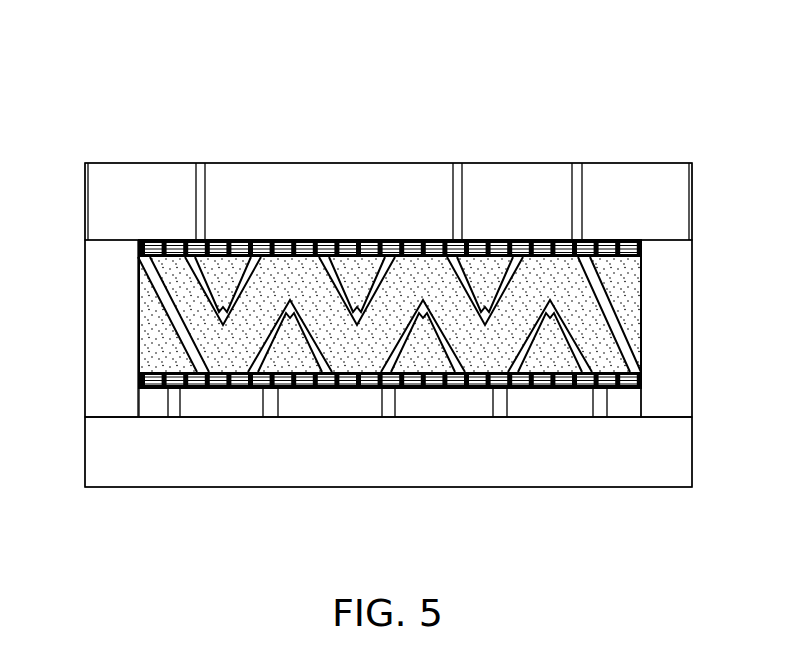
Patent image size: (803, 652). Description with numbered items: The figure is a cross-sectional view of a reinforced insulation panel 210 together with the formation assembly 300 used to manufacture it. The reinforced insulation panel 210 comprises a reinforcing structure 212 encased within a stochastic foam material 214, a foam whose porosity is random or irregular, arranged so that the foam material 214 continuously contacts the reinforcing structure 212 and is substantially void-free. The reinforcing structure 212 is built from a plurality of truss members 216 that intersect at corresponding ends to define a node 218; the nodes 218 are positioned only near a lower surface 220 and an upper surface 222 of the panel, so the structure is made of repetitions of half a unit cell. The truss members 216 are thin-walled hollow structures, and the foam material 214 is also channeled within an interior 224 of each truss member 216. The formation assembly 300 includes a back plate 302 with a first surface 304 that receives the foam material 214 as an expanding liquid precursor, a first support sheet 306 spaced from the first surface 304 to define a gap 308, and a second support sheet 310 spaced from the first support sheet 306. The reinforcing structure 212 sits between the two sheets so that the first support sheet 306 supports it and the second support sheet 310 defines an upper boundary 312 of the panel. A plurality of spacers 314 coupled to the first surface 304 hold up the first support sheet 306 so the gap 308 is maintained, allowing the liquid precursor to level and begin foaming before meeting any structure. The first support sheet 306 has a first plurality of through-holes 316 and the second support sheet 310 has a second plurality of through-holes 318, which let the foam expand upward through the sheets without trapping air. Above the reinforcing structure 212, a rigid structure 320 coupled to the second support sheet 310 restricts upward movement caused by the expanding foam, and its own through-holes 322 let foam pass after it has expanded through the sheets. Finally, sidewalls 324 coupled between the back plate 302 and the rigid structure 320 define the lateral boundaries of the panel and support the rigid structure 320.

The formation assembly 300 is at (66, 106).
The back plate 302 is at (680, 460).
The first surface 304 is at (623, 418).
The first support sheet 306 is at (642, 380).
The gap 308 is at (535, 416).
The second support sheet 310 is at (643, 250).
The upper boundary 312 is at (128, 254).
The spacers 314 is at (603, 405).
The first plurality of through-holes 316 is at (238, 394).
The second plurality of through-holes 318 is at (240, 236).
The rigid structure 320 is at (675, 173).
The through-holes 322 is at (396, 172).
The sidewalls 324 is at (683, 265).
The reinforced insulation panel 210 is at (130, 298).
The reinforcing structure 212 is at (642, 345).
The stochastic foam material 214 is at (642, 293).
The truss members 216 is at (610, 303).
The node 218 is at (538, 252).
The lower surface 220 is at (583, 387).
The upper surface 222 is at (605, 252).
The interior 224 is at (192, 320).